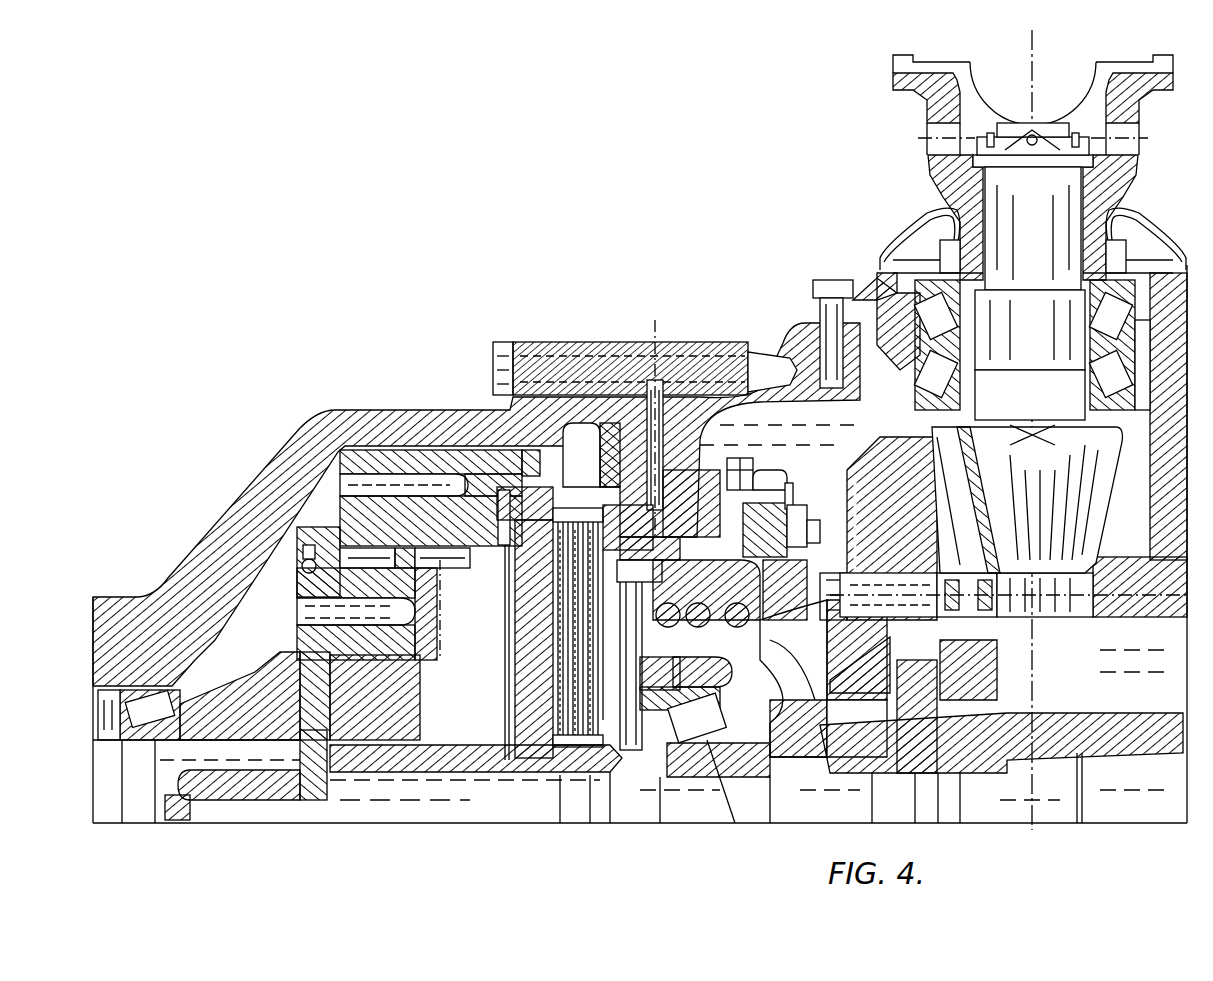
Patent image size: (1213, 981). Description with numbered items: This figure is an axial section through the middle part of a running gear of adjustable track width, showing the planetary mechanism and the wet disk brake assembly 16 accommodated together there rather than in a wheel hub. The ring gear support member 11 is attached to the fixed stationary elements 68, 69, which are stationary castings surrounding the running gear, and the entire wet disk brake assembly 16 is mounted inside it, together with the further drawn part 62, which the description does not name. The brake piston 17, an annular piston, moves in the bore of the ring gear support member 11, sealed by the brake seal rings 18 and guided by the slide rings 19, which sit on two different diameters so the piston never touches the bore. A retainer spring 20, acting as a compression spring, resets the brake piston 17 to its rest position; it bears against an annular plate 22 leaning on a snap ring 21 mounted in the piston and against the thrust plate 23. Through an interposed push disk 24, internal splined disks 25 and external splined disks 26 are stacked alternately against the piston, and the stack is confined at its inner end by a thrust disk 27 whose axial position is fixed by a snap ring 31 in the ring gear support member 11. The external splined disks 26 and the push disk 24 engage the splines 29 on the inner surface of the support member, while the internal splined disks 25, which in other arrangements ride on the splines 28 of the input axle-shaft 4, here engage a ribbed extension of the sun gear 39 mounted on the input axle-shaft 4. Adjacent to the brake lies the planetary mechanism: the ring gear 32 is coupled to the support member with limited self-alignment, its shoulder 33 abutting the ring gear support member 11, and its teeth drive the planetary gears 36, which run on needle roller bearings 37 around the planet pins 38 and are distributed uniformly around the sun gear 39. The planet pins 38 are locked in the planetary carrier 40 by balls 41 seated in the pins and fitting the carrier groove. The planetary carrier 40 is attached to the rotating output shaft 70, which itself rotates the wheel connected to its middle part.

The input axle-shaft 4 is at (659, 816).
The ring gear support member 11 is at (781, 478).
The wet disk brake assembly 16 is at (675, 565).
The brake piston 17 is at (794, 493).
The brake seal rings 18 is at (752, 555).
The slide rings 19 is at (672, 512).
The retainer spring 20 is at (699, 618).
The snap ring 21 is at (758, 664).
The annular plate 22 is at (762, 622).
The thrust plate 23 is at (606, 612).
The push disk 24 is at (620, 628).
The internal splined disks 25 is at (556, 713).
The external splined disks 26 is at (556, 632).
The thrust disk 27 is at (515, 615).
The splines 28 is at (556, 742).
The splines 29 is at (593, 455).
The snap ring 31 is at (498, 512).
The ring gear 32 is at (345, 480).
The shoulder 33 is at (543, 463).
The planetary gears 36 is at (346, 522).
The needle roller bearings 37 is at (455, 563).
The planet pins 38 is at (472, 645).
The sun gear 39 is at (400, 770).
The planetary carrier 40 is at (282, 692).
The balls 41 is at (303, 574).
The cylinder 62 is at (581, 455).
The fixed stationary element 68 is at (727, 340).
The fixed stationary element 69 is at (400, 410).
The rotating output shaft 70 is at (224, 767).